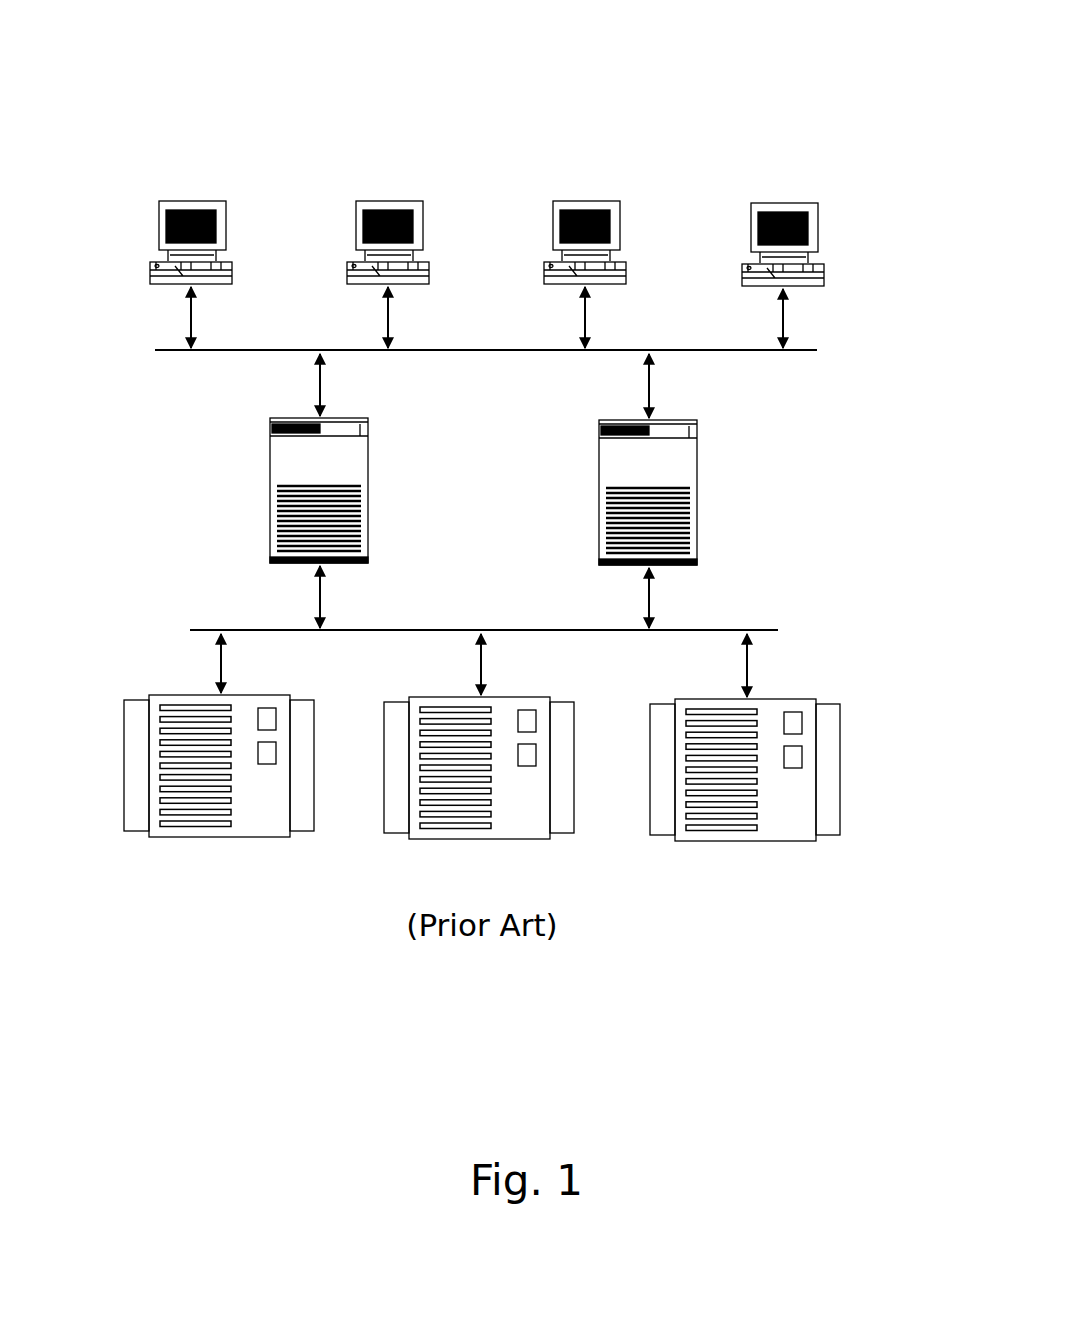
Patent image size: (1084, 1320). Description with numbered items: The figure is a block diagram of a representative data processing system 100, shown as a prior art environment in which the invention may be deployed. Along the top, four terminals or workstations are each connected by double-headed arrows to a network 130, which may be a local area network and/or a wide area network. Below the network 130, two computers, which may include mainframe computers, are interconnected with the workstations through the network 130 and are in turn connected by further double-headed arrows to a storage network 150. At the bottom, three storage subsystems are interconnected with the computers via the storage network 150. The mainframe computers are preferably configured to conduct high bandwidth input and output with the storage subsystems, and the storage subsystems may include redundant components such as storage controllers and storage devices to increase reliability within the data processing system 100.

The data processing system 100 is at (121, 69).
The network 130 is at (485, 349).
The storage network 150 is at (413, 629).